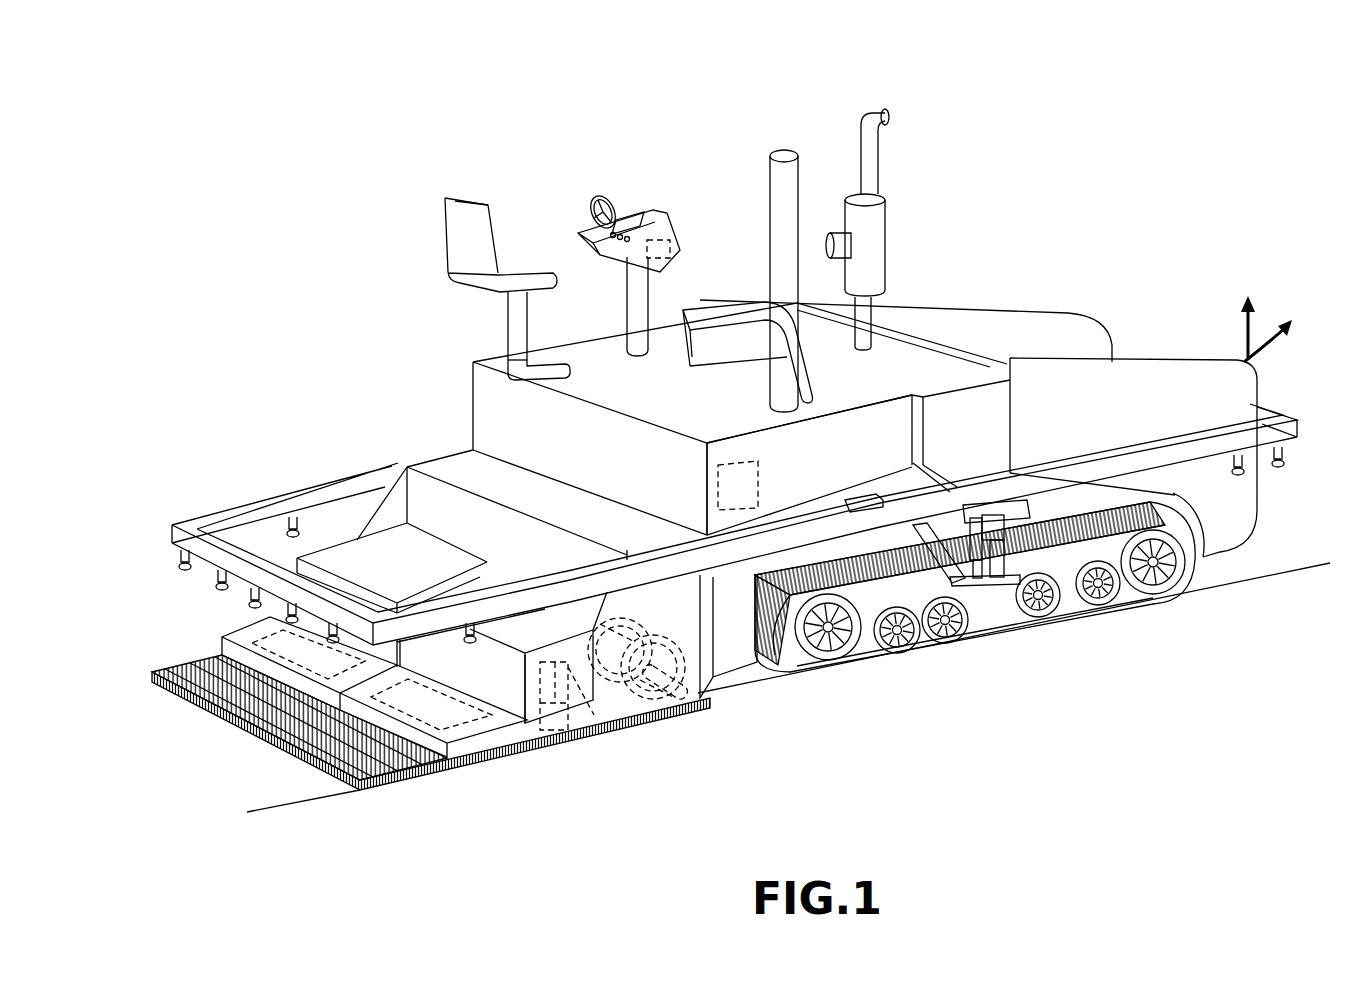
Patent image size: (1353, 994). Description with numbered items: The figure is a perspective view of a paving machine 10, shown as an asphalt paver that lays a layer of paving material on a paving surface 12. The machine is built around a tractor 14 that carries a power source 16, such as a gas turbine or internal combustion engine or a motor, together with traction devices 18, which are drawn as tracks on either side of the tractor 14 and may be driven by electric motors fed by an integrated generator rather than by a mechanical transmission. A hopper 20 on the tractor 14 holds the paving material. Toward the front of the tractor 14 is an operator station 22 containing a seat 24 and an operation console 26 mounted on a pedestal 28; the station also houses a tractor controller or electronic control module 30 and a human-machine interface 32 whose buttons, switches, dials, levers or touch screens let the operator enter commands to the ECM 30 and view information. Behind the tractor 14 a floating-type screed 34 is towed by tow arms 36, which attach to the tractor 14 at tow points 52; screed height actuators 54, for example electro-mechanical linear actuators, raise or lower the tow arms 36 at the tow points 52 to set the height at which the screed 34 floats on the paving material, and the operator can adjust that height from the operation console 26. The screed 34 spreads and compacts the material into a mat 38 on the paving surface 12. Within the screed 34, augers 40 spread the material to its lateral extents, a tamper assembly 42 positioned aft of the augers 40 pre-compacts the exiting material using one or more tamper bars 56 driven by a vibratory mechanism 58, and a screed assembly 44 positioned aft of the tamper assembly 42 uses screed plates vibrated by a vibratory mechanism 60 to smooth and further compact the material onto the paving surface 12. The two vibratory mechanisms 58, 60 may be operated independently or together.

The paving machine 10 is at (1042, 160).
The paving surface 12 is at (317, 783).
The tractor 14 is at (470, 400).
The power source 16 is at (892, 456).
The traction devices 18 is at (1185, 592).
The hopper 20 is at (1180, 357).
The operator station 22 is at (640, 121).
The seat 24 is at (453, 222).
The operation console 26 is at (636, 192).
The pedestal 28 is at (640, 297).
The tractor controller or electronic control module (ECM) 30 is at (685, 245).
The human-machine interface 32 is at (600, 245).
The screed 34 is at (310, 443).
The tow arms 36 is at (950, 605).
The mat 38 is at (433, 760).
The augers 40 is at (700, 678).
The tamper assembly 42 is at (603, 730).
The screed assembly 44 is at (510, 697).
The tow points 52 is at (985, 600).
The screed height actuators 54 is at (1060, 623).
The tamper bars 56 is at (560, 738).
The vibratory mechanism 58 is at (525, 672).
The vibratory mechanism 60 is at (255, 628).